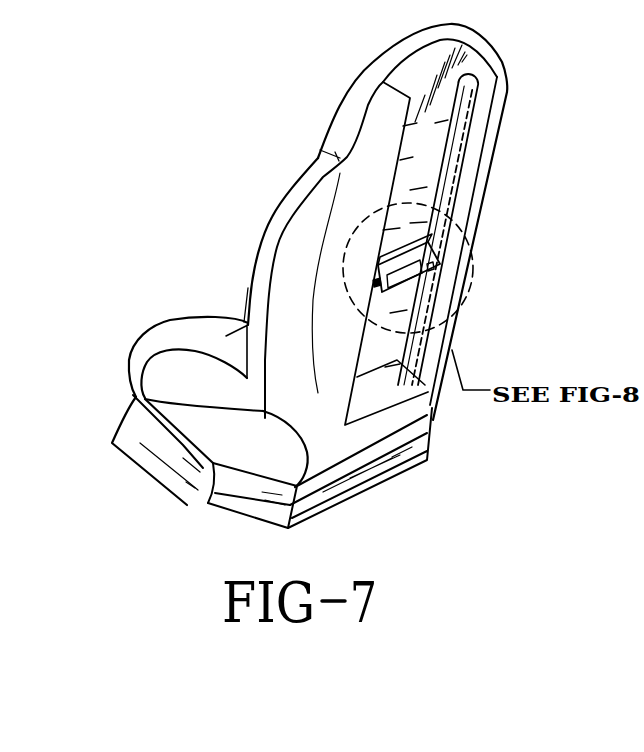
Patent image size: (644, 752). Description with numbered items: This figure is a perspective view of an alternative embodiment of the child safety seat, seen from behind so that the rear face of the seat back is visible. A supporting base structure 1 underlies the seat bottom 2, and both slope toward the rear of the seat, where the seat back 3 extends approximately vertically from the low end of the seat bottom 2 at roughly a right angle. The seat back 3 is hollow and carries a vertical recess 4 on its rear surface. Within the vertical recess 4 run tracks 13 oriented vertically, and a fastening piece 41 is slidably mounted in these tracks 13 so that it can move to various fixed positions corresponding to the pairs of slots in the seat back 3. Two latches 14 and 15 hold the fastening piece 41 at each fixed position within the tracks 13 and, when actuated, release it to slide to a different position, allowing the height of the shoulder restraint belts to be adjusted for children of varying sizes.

The supporting base structure 1 is at (388, 474).
The seat bottom 2 is at (241, 327).
The seat back 3 is at (306, 254).
The vertical recess 4 is at (478, 97).
The tracks 13 is at (442, 215).
The latch 14 is at (440, 272).
The latch 15 is at (377, 282).
The fastening piece 41 is at (432, 262).